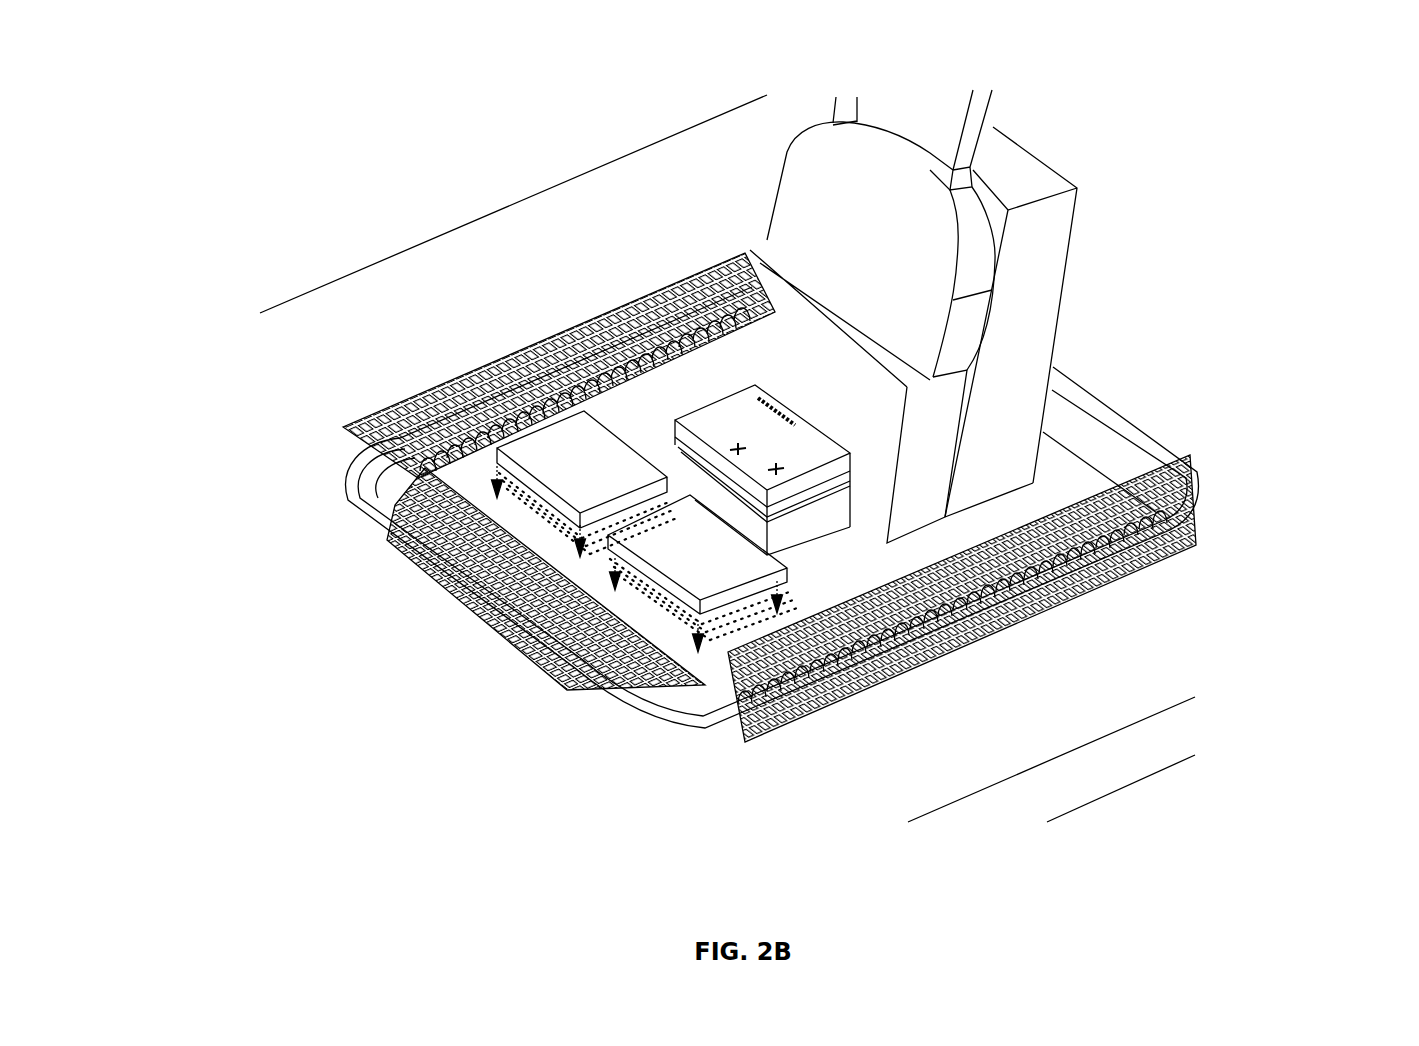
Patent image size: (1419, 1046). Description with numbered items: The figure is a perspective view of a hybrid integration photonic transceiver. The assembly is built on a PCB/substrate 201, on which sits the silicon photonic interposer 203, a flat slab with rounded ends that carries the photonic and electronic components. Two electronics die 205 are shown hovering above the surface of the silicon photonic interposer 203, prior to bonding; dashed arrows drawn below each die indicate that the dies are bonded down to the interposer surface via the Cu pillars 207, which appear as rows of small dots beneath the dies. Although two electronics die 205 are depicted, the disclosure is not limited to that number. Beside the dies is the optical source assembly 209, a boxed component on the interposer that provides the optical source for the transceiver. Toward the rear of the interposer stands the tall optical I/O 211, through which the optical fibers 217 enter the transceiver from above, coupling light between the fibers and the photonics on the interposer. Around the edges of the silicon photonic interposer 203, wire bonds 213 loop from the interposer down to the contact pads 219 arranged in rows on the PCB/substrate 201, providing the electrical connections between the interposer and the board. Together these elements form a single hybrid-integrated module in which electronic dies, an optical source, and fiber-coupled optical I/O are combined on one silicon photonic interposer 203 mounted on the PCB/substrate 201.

The PCB/substrate 201 is at (299, 600).
The silicon photonic interposer 203 is at (1061, 487).
The electronics die 205 is at (652, 513).
The Cu pillars 207 is at (662, 640).
The optical source assembly 209 is at (735, 406).
The optical I/O 211 is at (1043, 294).
The wire bonds 213 is at (461, 556).
The optical fibers 217 is at (990, 124).
The contact pads 219 is at (475, 638).